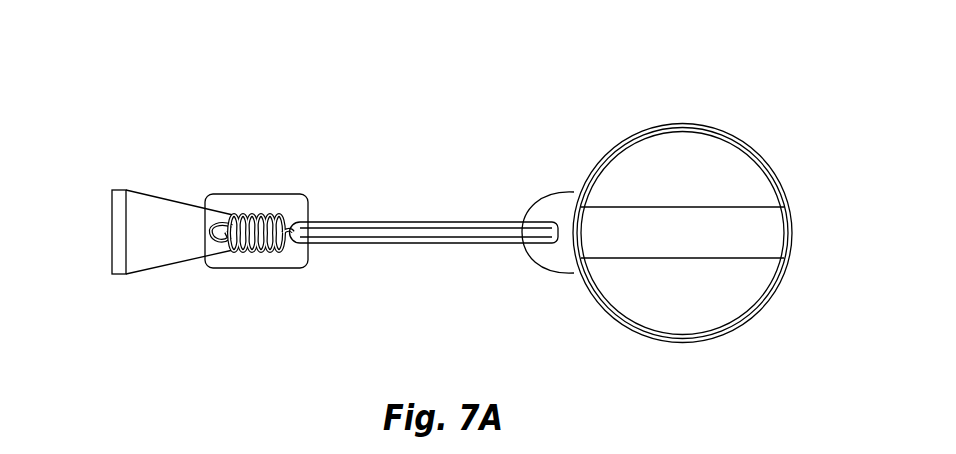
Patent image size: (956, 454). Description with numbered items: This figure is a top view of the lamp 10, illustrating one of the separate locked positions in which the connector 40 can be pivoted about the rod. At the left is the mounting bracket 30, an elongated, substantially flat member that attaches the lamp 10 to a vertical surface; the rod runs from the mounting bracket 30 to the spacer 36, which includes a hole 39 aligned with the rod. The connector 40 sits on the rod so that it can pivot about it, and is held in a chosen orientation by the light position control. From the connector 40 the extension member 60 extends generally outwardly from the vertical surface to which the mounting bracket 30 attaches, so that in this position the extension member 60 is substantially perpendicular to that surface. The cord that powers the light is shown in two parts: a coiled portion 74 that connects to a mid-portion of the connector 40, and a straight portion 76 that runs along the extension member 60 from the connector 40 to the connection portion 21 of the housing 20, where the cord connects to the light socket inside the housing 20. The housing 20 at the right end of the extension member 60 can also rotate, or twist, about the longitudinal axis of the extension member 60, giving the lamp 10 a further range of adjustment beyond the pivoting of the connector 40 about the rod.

The lamp 10 is at (368, 101).
The housing 20 is at (758, 183).
The connection portion 21 is at (557, 205).
The mounting bracket 30 is at (115, 226).
The spacer 36 is at (155, 212).
The hole 39 is at (222, 222).
The connector 40 is at (292, 203).
The extension member 60 is at (425, 222).
The coiled portion 74 is at (263, 250).
The straight portion 76 is at (477, 232).